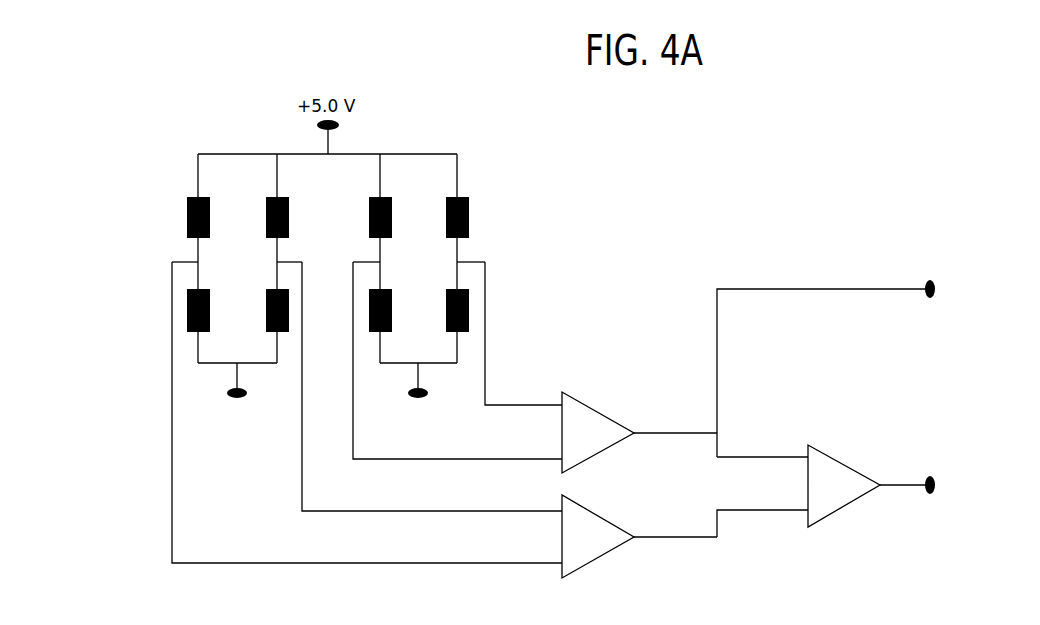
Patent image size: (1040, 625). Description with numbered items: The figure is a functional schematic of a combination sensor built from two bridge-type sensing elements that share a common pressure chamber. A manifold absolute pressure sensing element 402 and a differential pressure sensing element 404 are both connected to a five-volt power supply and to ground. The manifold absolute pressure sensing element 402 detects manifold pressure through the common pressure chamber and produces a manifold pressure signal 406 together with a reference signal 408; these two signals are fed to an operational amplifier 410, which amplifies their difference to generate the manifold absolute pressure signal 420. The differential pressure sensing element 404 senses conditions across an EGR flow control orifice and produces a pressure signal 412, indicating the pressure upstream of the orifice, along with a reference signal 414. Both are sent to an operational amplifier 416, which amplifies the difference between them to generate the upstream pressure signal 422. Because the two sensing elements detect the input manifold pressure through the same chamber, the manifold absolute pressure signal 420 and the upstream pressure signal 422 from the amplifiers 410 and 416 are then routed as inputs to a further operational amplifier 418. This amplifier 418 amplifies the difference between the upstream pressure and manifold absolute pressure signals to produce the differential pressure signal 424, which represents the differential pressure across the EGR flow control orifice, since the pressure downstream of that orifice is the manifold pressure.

The MAP sensing element 402 is at (457, 134).
The DP sensing element 404 is at (198, 143).
The manifold pressure signal 406 is at (495, 403).
The reference signal 408 is at (435, 442).
The operational amplifier 410 is at (588, 400).
The pressure signal 412 is at (367, 512).
The reference signal 414 is at (350, 565).
The operational amplifier 416 is at (593, 508).
The operational amplifier 418 is at (847, 463).
The manifold absolute pressure (MAP) signal 420 is at (757, 289).
The upstream pressure signal P1 422 is at (738, 512).
The differential pressure (DP) signal 424 is at (897, 487).